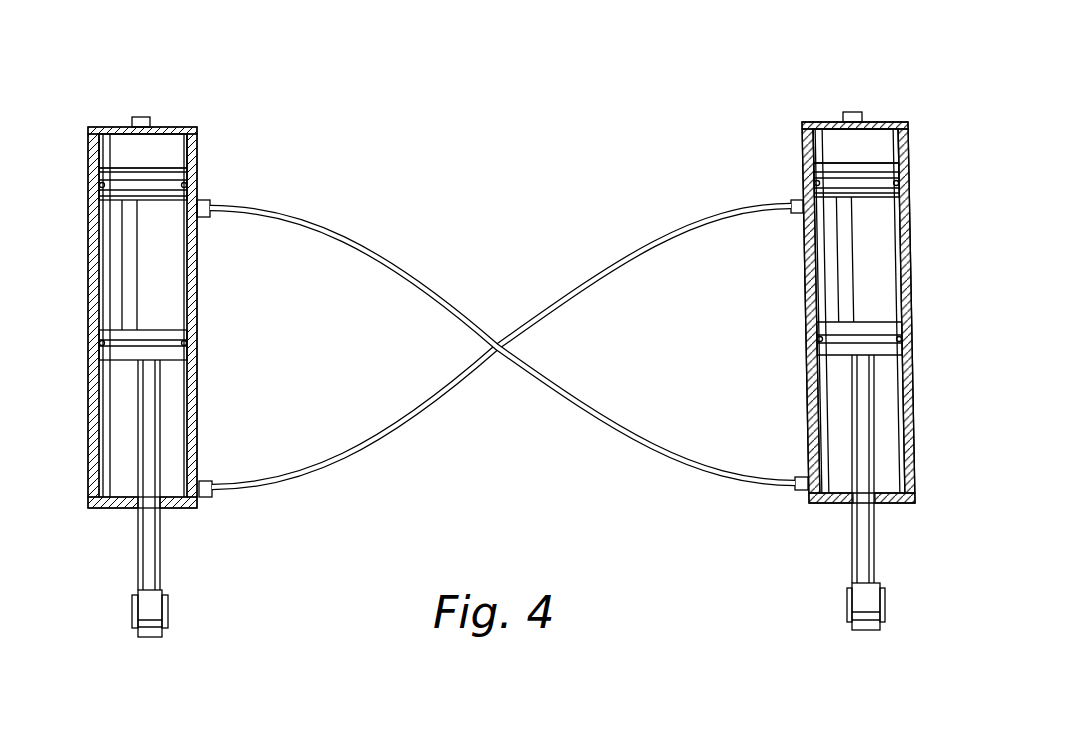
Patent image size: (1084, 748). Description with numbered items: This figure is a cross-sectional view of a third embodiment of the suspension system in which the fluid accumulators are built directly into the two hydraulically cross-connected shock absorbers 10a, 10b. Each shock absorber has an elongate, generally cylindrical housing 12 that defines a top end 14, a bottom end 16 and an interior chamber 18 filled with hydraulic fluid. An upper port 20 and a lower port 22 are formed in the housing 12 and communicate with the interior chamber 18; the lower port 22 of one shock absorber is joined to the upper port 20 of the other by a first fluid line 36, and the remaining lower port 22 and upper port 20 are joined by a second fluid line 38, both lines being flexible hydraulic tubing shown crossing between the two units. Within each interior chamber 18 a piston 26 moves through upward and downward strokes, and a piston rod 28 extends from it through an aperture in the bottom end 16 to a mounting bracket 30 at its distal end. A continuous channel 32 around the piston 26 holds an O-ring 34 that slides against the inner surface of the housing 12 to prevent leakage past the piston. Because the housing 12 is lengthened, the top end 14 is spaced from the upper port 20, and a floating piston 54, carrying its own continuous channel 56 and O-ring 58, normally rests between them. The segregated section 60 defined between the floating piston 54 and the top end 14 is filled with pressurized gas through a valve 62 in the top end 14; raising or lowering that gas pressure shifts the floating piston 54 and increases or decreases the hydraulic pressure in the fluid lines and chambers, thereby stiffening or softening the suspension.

The shock absorber 10a is at (170, 108).
The shock absorber 10b is at (885, 98).
The housing 12 is at (222, 371).
The top end 14 is at (103, 124).
The bottom end 16 is at (192, 508).
The interior chamber 18 is at (183, 430).
The upper port 20 is at (205, 217).
The lower port 22 is at (210, 481).
The piston 26 is at (141, 330).
The piston rod 28 is at (158, 560).
The mounting bracket 30 is at (165, 622).
The continuous channel 32 is at (171, 342).
The O-ring 34 is at (183, 343).
The first fluid line 36 is at (590, 275).
The second fluid line 38 is at (395, 278).
The floating piston 54 is at (160, 165).
The continuous channel 56 is at (140, 200).
The O-ring 58 is at (183, 185).
The segregated section 60 is at (160, 148).
The valve 62 is at (141, 117).